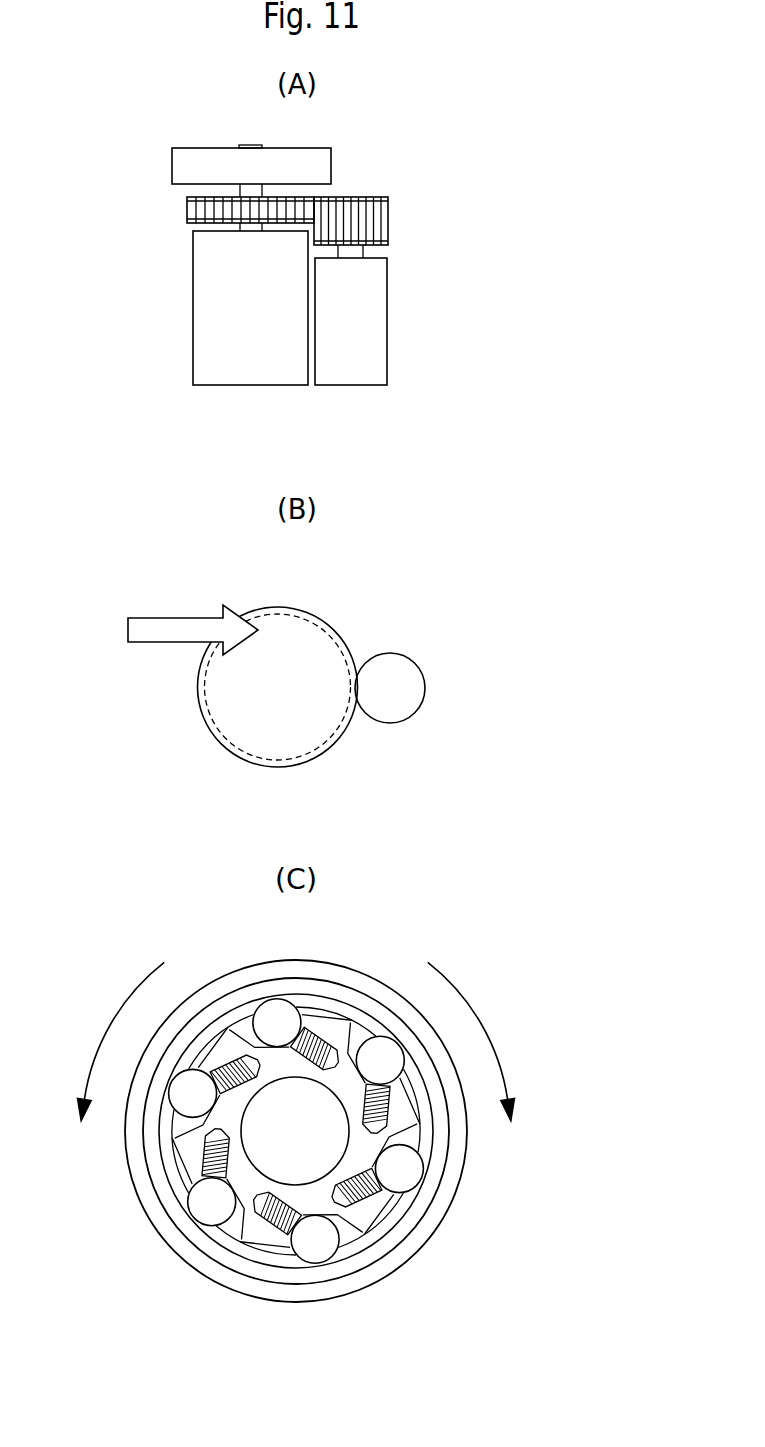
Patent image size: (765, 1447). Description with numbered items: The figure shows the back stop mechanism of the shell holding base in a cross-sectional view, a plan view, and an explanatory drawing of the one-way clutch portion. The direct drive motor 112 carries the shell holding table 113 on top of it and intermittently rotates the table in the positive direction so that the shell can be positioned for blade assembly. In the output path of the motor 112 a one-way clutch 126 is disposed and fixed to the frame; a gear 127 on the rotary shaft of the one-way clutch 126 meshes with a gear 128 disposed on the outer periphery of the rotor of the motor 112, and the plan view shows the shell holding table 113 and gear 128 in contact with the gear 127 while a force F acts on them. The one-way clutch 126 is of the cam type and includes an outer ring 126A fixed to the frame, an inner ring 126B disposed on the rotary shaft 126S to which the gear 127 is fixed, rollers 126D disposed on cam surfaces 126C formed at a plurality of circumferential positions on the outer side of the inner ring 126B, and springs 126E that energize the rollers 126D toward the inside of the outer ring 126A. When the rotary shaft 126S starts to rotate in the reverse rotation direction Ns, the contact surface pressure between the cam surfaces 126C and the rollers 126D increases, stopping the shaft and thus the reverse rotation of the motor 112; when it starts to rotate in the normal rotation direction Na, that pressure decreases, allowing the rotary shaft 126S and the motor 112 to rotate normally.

The direct drive motor 112 is at (193, 299).
The shell holding table 113 is at (172, 165).
The one-way clutch 126 is at (388, 318).
The gear 127 is at (388, 220).
The gear 128 is at (187, 208).
The outer ring 126A is at (440, 1187).
The inner ring 126B is at (367, 1208).
The cam surfaces 126C is at (347, 1222).
The rollers 126D is at (312, 1240).
The springs 126E is at (260, 1215).
The rotary shaft 126S is at (285, 1142).
The force F is at (160, 617).
The reverse rotation direction Ns is at (118, 1007).
The normal rotation direction Na is at (470, 1007).